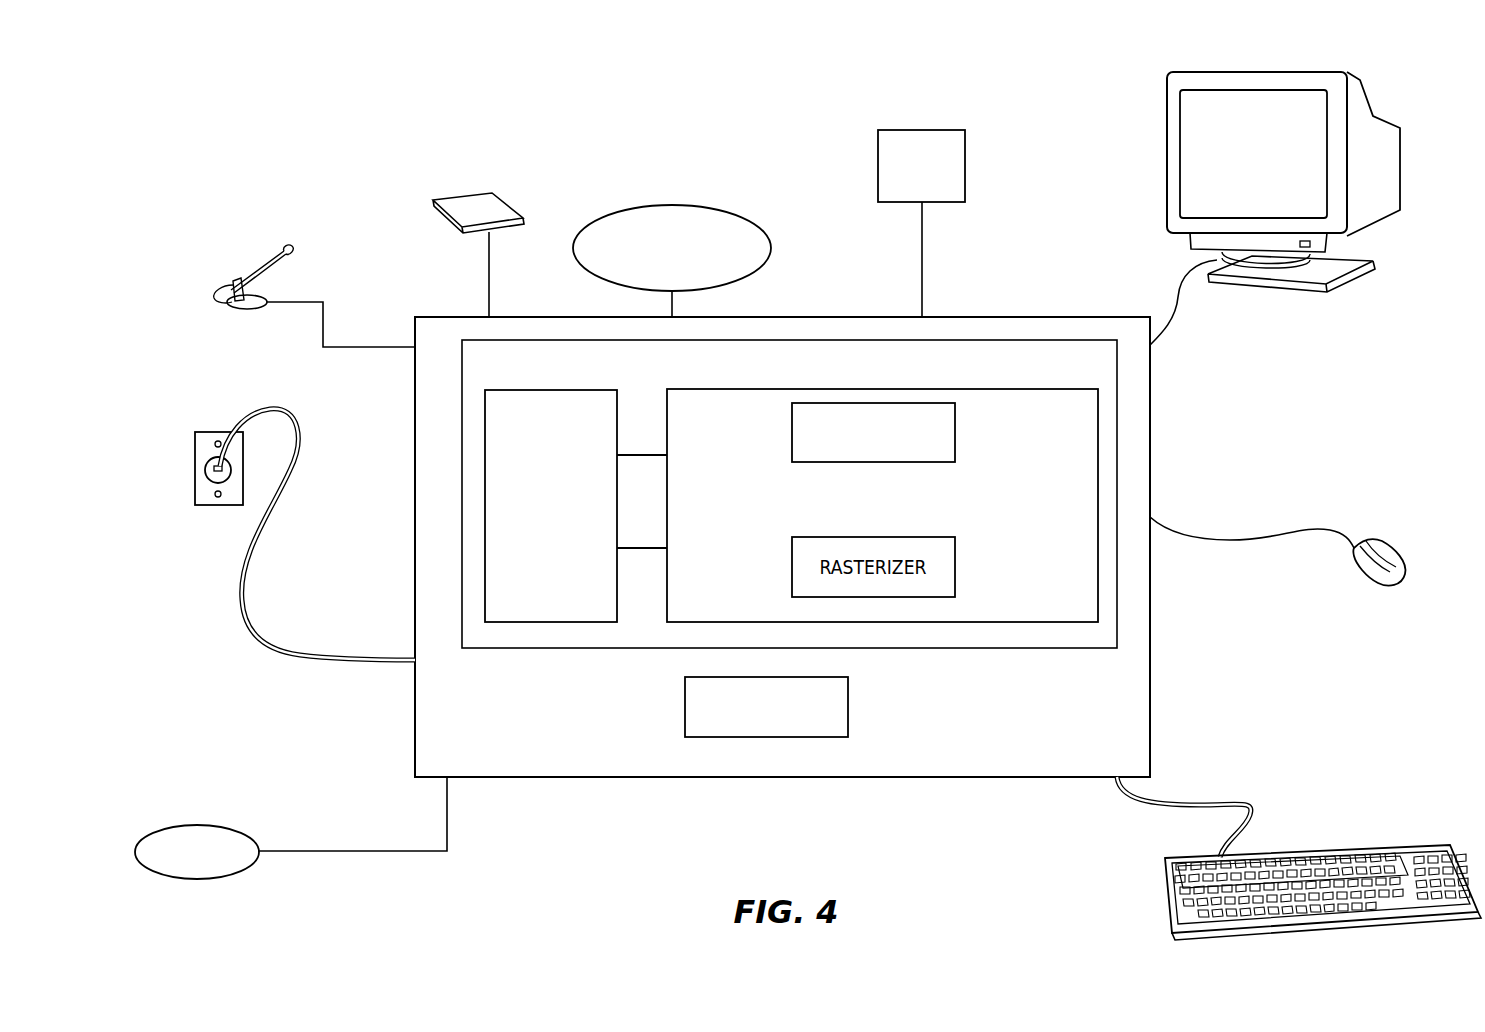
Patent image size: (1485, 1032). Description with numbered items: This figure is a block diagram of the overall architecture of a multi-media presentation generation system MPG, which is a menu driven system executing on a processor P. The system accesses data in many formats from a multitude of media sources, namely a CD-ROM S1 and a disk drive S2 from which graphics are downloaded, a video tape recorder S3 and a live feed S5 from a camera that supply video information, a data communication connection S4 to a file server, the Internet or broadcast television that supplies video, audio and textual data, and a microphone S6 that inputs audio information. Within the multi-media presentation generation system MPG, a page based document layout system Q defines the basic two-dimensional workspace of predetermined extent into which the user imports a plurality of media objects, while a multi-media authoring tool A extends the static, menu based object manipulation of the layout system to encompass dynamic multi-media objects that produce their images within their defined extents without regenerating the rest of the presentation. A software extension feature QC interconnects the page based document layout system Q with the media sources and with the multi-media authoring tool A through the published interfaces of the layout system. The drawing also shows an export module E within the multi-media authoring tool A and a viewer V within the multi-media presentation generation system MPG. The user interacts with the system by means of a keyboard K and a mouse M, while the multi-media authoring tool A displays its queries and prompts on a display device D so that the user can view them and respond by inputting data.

The CD-ROM S1 is at (193, 825).
The disk drive S2 is at (468, 200).
The video tape recorder S3 is at (672, 215).
The data communication connection S4 is at (197, 500).
The live feed S5 is at (877, 145).
The microphone S6 is at (248, 268).
The processor P is at (1150, 424).
The multi-media presentation generation system MPG is at (507, 650).
The page based document layout system Q is at (528, 388).
The software extension feature QC is at (648, 453).
The multi-media authoring tool A is at (990, 389).
The export module E is at (955, 425).
The viewer V is at (683, 698).
The display device D is at (1170, 130).
The mouse M is at (1393, 560).
The keyboard K is at (1165, 885).